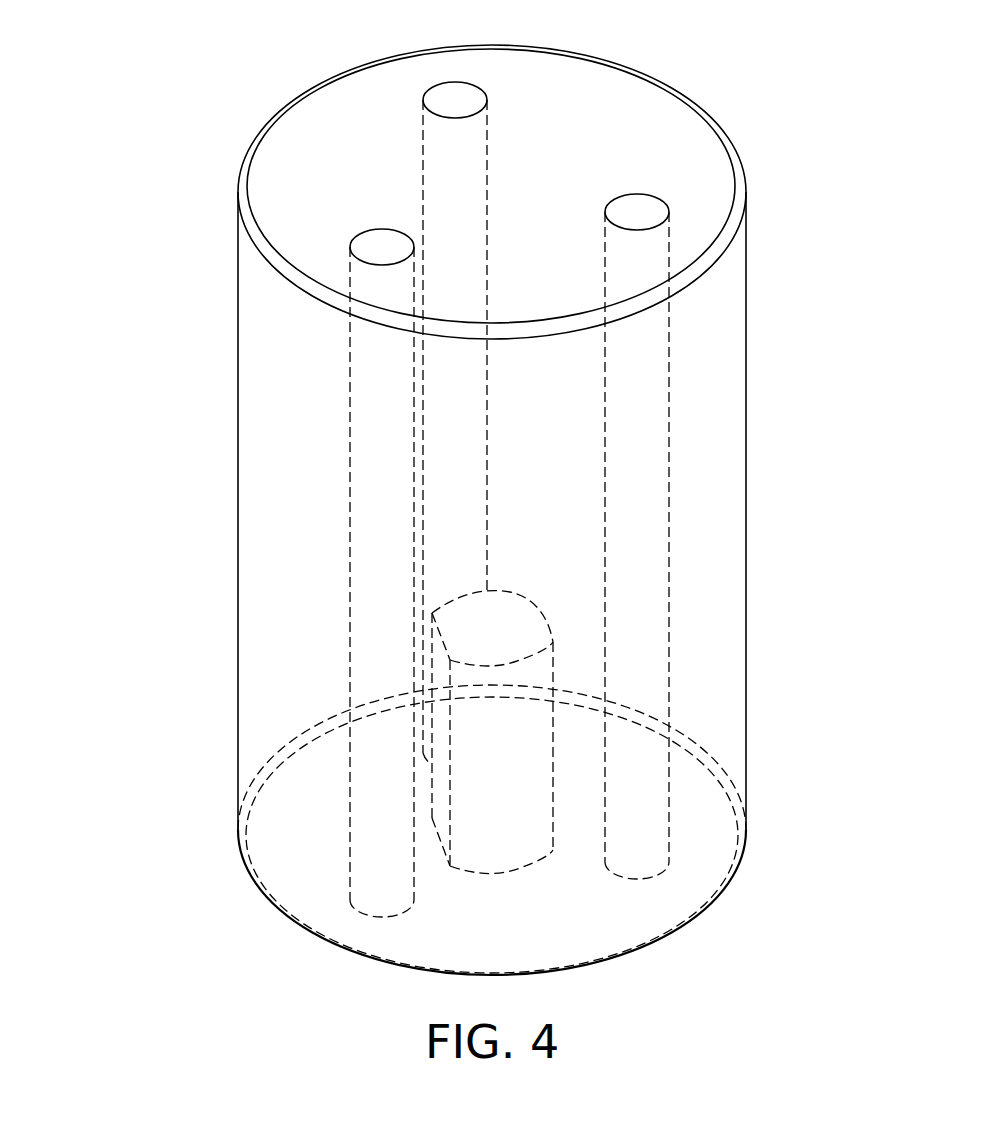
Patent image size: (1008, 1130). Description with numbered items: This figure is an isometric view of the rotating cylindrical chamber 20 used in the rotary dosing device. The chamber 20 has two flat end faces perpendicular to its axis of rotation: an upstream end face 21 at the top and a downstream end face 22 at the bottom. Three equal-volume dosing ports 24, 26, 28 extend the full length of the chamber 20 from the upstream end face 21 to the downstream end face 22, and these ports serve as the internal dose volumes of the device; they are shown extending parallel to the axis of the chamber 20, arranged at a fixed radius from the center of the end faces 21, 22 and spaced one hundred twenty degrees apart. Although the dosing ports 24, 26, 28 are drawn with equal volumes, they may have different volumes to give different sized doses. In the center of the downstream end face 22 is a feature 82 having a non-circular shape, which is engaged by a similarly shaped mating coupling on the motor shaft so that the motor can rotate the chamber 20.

The rotating cylindrical chamber 20 is at (183, 60).
The upstream end face 21 is at (293, 185).
The downstream end face 22 is at (300, 845).
The dosing port 24 is at (487, 537).
The dosing port 26 is at (670, 428).
The dosing port 28 is at (350, 421).
The feature 82 is at (553, 775).